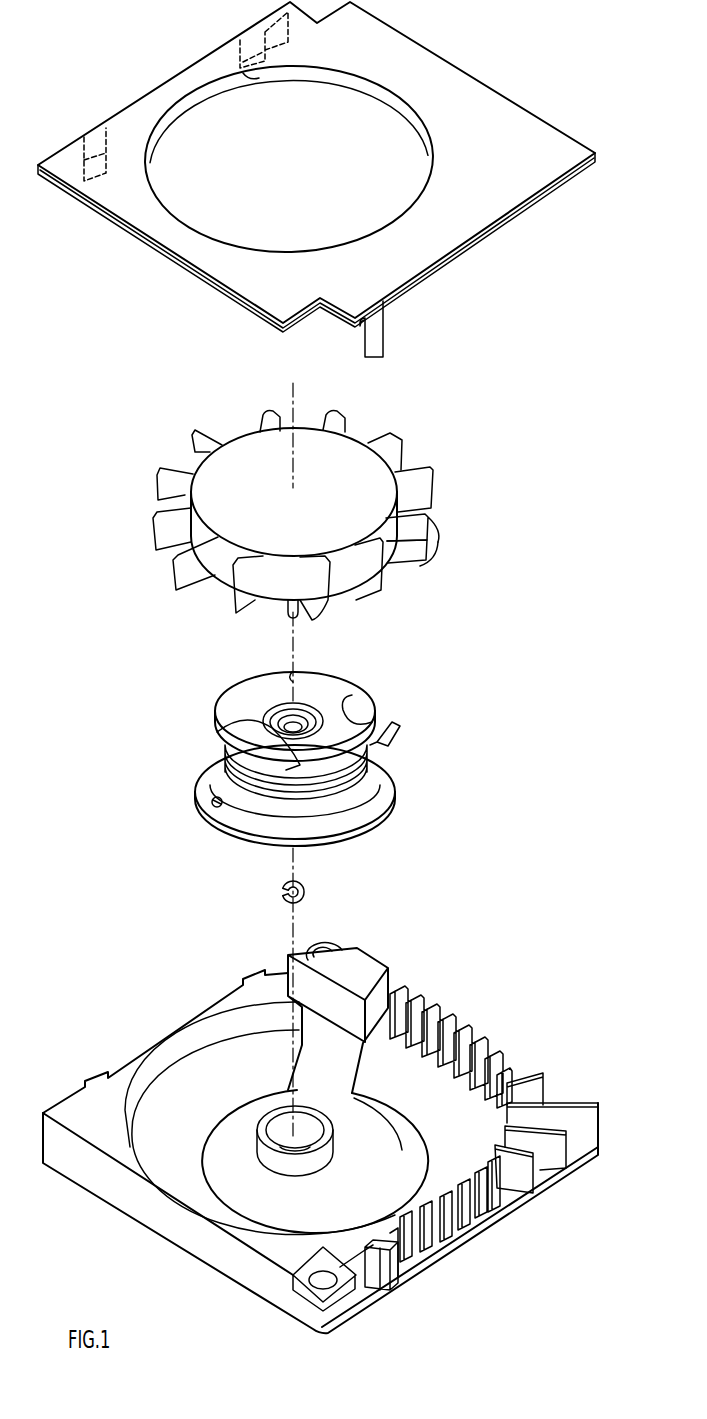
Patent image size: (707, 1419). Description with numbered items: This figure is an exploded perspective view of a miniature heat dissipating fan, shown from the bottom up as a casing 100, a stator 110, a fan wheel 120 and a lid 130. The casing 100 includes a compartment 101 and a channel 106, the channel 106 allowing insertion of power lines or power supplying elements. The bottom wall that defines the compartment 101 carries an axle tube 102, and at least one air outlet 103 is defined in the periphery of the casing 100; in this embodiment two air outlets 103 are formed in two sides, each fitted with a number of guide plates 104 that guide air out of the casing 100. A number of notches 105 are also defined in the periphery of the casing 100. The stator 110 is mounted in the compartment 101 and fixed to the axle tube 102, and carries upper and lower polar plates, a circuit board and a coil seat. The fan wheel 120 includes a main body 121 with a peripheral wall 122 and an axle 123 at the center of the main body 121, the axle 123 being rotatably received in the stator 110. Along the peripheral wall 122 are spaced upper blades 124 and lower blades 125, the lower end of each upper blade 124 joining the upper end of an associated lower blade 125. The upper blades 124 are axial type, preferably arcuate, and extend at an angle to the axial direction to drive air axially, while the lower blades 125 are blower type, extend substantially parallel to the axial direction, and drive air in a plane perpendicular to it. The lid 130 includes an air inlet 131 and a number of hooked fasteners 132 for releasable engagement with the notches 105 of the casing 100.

The casing 100 is at (327, 1126).
The compartment 101 is at (193, 1077).
The axle tube 102 is at (327, 1153).
The air outlet 103 is at (490, 1040).
The guide plates 104 is at (540, 1087).
The notches 105 is at (393, 1285).
The channel 106 is at (278, 965).
The stator 110 is at (377, 749).
The fan wheel 120 is at (321, 519).
The main body 121 is at (348, 452).
The peripheral wall 122 is at (337, 587).
The axle 123 is at (287, 605).
The upper blades 124 is at (413, 522).
The lower blades 125 is at (410, 558).
The lid 130 is at (325, 179).
The air inlet 131 is at (427, 147).
The hooked fastener 132 is at (385, 337).